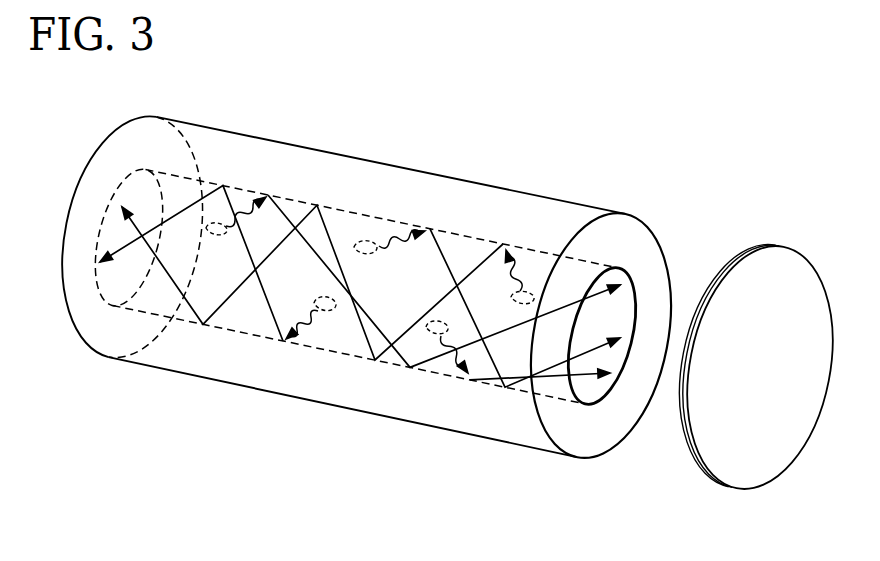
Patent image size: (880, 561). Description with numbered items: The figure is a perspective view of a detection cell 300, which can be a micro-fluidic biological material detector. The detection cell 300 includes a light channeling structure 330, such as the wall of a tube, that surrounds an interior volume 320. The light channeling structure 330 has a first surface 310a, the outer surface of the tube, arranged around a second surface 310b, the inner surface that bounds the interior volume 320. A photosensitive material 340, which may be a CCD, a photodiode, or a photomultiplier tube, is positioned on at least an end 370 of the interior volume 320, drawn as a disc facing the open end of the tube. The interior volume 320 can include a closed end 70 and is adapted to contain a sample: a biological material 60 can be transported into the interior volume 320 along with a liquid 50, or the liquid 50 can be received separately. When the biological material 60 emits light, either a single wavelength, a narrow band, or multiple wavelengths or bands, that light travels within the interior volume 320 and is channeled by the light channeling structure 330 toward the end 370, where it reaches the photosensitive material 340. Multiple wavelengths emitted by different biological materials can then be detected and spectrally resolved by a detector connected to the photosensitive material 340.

The detection cell 300 is at (682, 137).
The first surface 310a is at (372, 162).
The second surface 310b is at (287, 198).
The interior volume 320 is at (477, 238).
The light channeling structure 330 is at (643, 247).
The photosensitive material 340 is at (773, 450).
The end 370 is at (600, 455).
The liquid 50 is at (242, 309).
The biological material 60 is at (337, 314).
The closed end 70 is at (311, 328).